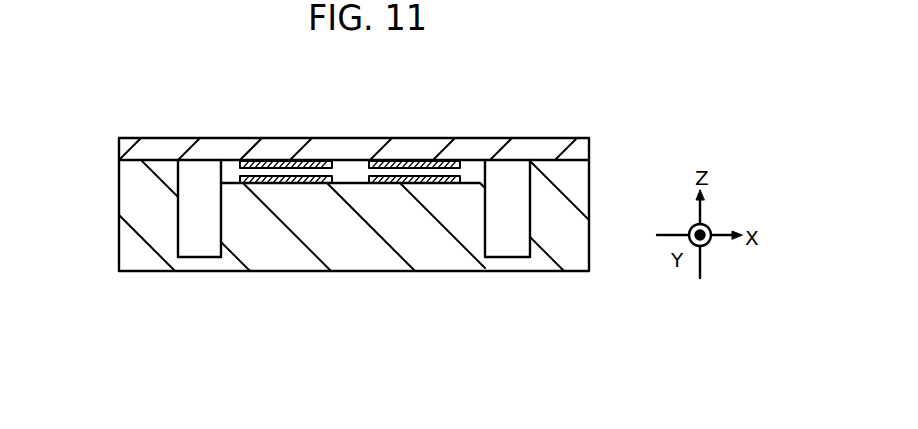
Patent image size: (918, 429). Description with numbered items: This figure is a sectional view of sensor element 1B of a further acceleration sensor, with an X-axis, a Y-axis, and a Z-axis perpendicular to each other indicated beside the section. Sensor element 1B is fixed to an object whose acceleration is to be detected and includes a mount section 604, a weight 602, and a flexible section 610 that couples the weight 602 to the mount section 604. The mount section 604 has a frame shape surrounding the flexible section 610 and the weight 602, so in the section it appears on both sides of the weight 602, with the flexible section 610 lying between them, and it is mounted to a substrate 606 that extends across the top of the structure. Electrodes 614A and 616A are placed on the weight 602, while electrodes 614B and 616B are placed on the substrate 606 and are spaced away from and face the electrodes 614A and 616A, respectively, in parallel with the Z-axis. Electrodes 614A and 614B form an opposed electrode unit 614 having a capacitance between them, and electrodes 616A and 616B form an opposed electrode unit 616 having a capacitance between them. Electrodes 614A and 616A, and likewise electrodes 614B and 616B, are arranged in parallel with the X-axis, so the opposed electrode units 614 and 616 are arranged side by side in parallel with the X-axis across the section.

The sensor element 1B is at (617, 102).
The weight 602 is at (362, 248).
The mount section 604 is at (135, 196).
The substrate 606 is at (167, 153).
The flexible section 610 is at (205, 258).
The opposed electrode unit 614 is at (275, 115).
The electrode 614A is at (348, 102).
The electrode 614B is at (292, 161).
The opposed electrode unit 616 is at (446, 115).
The electrode 616A is at (414, 141).
The electrode 616B is at (449, 161).